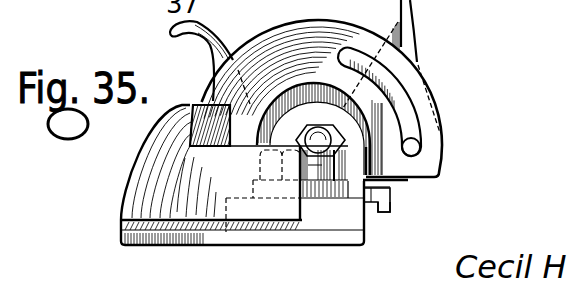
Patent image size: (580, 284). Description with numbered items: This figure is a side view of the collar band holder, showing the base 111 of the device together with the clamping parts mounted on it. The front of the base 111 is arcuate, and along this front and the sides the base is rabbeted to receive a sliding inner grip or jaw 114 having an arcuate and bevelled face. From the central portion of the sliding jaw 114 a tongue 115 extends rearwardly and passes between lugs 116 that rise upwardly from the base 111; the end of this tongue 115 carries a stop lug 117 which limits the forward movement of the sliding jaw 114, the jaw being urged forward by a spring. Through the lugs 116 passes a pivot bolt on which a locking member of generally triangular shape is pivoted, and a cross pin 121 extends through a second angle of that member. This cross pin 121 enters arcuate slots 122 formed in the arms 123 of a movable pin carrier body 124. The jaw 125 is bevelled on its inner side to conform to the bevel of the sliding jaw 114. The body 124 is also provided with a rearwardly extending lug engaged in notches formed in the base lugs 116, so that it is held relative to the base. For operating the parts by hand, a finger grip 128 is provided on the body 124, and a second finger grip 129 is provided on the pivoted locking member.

The base 111 is at (351, 242).
The sliding inner grip or jaw 114 is at (124, 227).
The tongue 115 is at (390, 197).
The lugs 116 is at (395, 185).
The stop lug 117 is at (383, 214).
The cross pin 121 is at (318, 139).
The arcuate slots 122 is at (397, 91).
The arms 123 is at (278, 33).
The movable pin carrier body 124 is at (222, 131).
The jaw 125 is at (132, 171).
The finger grip 128 is at (177, 37).
The finger grip 129 is at (413, 10).